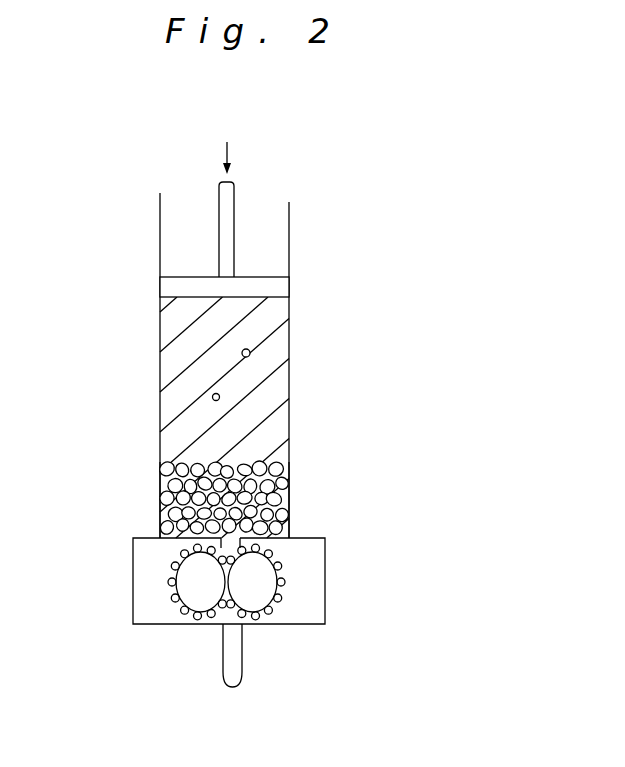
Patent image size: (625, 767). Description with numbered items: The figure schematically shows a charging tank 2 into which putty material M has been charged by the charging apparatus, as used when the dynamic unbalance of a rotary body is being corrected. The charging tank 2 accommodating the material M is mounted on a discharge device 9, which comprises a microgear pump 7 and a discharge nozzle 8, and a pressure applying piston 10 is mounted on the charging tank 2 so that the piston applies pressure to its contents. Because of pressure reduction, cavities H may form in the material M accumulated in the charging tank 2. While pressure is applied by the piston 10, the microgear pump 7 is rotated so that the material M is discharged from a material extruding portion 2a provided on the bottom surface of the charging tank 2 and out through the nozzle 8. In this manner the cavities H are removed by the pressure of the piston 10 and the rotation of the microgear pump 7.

The charging tank 2 is at (289, 320).
The material extruding portion 2a is at (292, 513).
The pressure applying piston 10 is at (277, 290).
The material M is at (250, 353).
The cavities H is at (220, 463).
The discharge device 9 is at (130, 587).
The microgear pump 7 is at (260, 580).
The discharge nozzle 8 is at (236, 656).